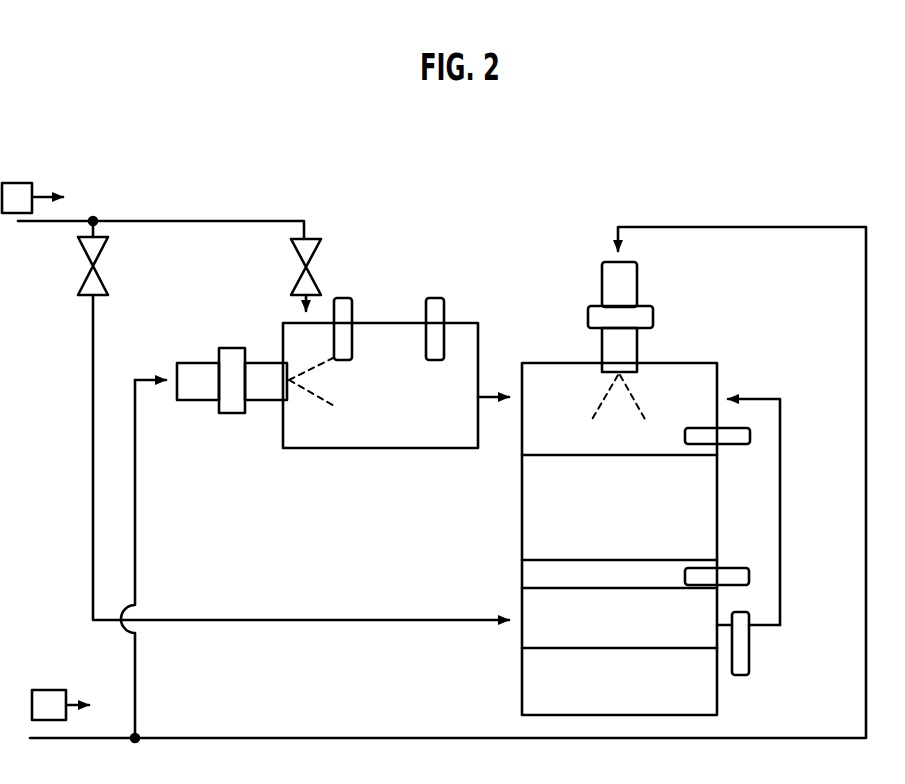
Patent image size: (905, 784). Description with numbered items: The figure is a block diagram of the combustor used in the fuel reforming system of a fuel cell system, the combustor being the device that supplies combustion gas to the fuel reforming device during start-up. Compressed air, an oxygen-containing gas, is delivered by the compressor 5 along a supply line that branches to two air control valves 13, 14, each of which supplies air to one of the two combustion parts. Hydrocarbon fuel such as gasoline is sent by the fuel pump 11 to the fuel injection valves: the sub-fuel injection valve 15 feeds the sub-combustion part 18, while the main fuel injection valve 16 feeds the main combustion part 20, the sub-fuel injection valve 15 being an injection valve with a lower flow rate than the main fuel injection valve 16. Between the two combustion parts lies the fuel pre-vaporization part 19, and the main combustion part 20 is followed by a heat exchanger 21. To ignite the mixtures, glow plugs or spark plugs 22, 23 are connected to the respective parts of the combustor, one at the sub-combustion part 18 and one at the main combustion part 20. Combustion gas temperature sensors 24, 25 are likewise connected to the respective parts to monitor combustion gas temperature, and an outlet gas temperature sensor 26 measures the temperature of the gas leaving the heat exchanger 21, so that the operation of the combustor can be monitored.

The compressor 5 is at (32, 197).
The fuel pump 11 is at (60, 704).
The air control valve 13 is at (312, 238).
The air control valve 14 is at (110, 250).
The sub-fuel injection valve 15 is at (193, 363).
The main fuel injection valve 16 is at (637, 272).
The sub-combustion part 18 is at (377, 448).
The fuel pre-vaporization part 19 is at (718, 380).
The main combustion part 20 is at (522, 534).
The heat exchanger 21 is at (522, 641).
The glow plug 22 is at (345, 298).
The glow plug 23 is at (740, 445).
The combustion gas temperature sensor 24 is at (434, 298).
The combustion gas temperature sensor 25 is at (738, 568).
The outlet gas temperature sensor 26 is at (750, 658).